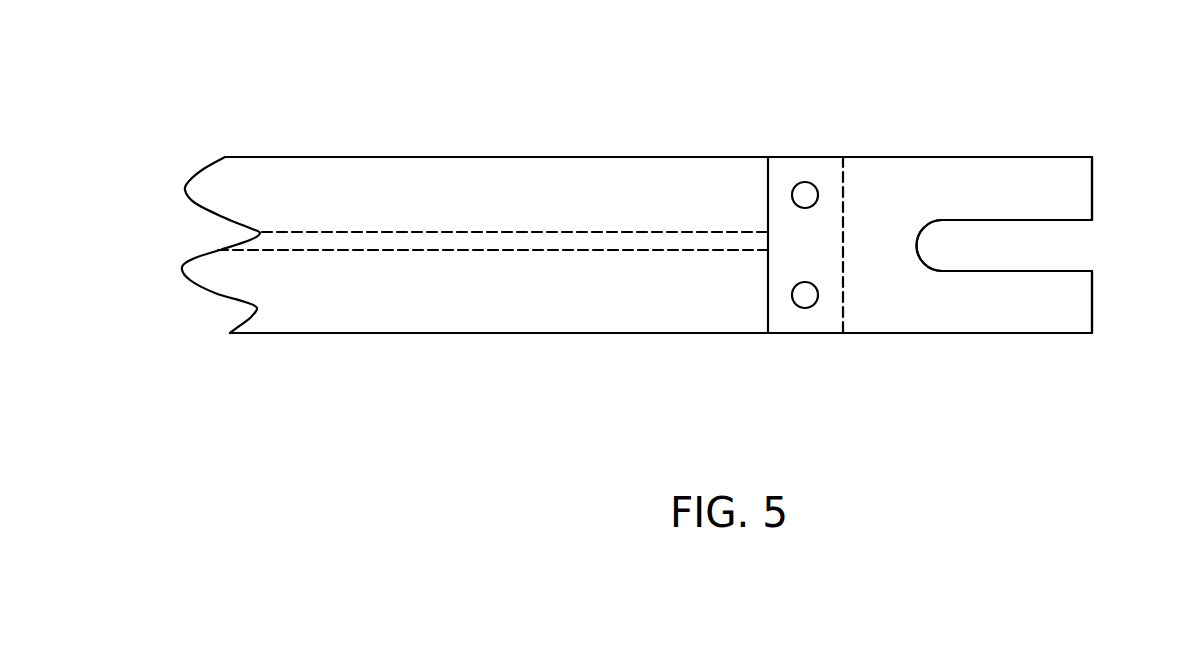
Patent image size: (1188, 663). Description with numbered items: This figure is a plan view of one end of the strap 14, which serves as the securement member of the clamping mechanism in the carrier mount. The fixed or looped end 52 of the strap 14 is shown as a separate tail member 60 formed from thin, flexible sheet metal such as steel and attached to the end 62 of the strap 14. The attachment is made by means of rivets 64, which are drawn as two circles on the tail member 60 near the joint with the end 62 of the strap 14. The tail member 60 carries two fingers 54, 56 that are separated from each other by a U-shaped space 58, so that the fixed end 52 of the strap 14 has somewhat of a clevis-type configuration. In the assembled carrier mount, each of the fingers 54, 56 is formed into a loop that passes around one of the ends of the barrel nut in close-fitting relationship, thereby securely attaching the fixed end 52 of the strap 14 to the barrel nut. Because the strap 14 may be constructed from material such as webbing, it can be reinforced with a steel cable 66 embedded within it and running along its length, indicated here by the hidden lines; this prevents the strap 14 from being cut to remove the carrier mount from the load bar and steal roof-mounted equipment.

The fixed end 52 is at (997, 53).
The strap 14 is at (477, 205).
The tail member 60 is at (957, 155).
The finger 54 is at (1082, 190).
The U-shaped space 58 is at (1082, 248).
The finger 56 is at (1067, 307).
The end of the strap 62 is at (817, 252).
The rivets 64 is at (802, 296).
The steel cable 66 is at (532, 245).